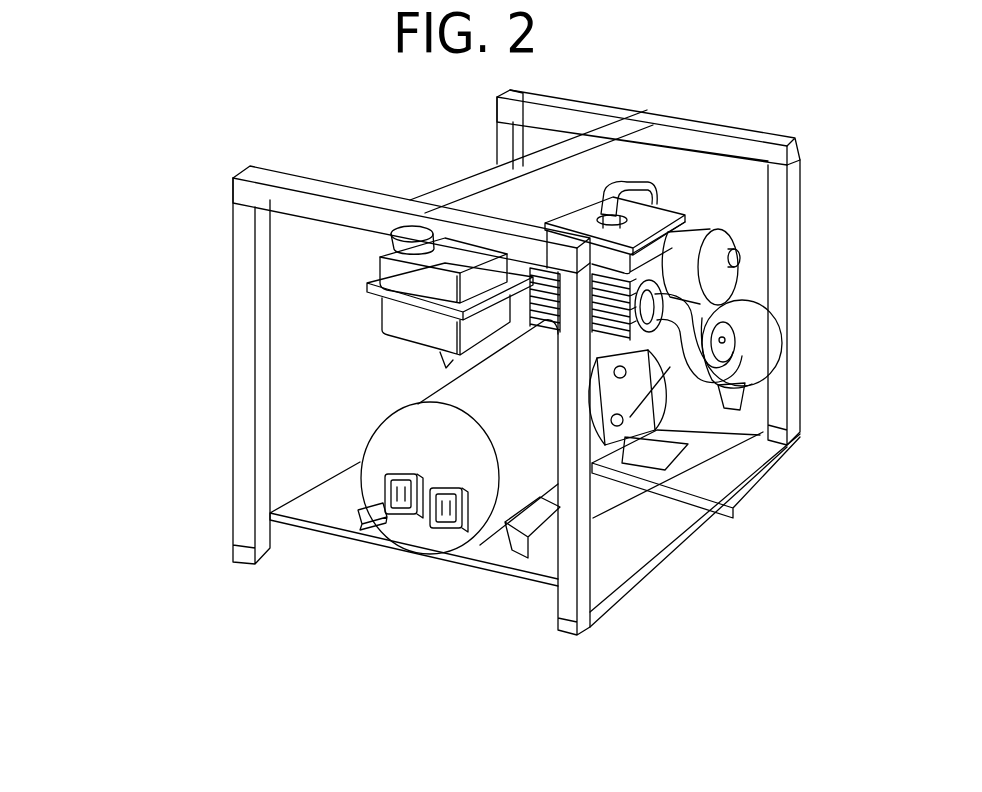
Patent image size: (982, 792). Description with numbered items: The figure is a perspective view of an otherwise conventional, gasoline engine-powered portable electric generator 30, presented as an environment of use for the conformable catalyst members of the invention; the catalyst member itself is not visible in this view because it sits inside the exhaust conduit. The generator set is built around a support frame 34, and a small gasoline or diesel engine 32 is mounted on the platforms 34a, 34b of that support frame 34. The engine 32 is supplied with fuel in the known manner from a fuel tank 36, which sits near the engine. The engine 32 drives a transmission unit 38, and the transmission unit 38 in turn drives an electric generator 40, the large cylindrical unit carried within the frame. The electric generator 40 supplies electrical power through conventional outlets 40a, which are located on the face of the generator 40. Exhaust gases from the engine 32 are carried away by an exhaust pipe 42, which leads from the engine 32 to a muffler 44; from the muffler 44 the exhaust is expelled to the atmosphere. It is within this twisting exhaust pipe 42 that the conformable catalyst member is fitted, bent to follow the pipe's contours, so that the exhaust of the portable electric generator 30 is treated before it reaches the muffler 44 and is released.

The portable electric generator 30 is at (161, 334).
The engine 32 is at (664, 213).
The support frame 34 is at (798, 240).
The platform 34a is at (343, 507).
The platform 34b is at (723, 482).
The fuel tank 36 is at (400, 321).
The transmission unit 38 is at (673, 430).
The electric generator 40 is at (390, 438).
The outlets 40a is at (440, 524).
The exhaust pipe 42 is at (702, 368).
The muffler 44 is at (770, 348).